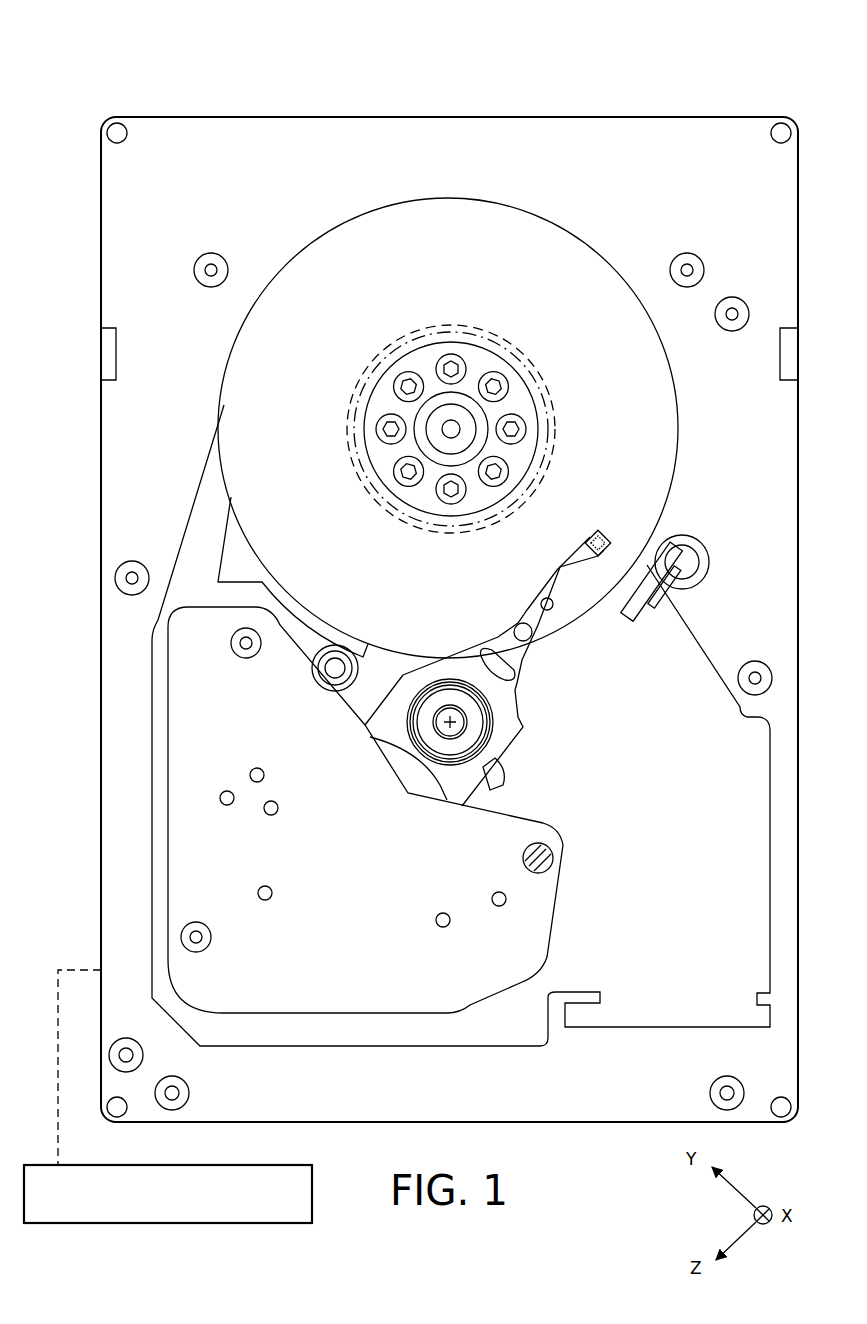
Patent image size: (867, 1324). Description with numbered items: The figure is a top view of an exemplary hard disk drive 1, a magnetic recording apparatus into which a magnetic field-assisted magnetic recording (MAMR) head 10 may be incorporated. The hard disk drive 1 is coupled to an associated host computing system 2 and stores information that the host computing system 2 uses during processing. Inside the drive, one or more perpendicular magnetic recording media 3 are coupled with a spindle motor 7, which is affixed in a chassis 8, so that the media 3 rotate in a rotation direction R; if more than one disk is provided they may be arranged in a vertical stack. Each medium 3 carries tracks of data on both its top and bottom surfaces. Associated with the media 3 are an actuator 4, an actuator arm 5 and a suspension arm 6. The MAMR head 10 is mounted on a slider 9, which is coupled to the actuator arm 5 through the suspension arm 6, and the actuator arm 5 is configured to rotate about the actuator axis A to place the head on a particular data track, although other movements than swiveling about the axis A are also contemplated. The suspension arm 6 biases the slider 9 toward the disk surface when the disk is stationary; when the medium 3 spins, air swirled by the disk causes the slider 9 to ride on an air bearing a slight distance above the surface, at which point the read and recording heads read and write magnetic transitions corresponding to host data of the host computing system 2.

The hard disk drive 1 is at (360, 38).
The host computing system 2 is at (168, 1096).
The perpendicular magnetic recording media 3 is at (482, 242).
The actuator 4 is at (540, 910).
The actuator arm 5 is at (530, 615).
The suspension arm 6 is at (567, 582).
The spindle motor 7 is at (456, 424).
The chassis 8 is at (482, 117).
The slider 9 is at (590, 537).
The magnetic field-assisted magnetic recording head 10 is at (605, 535).
The actuator axis A is at (455, 721).
The rotation direction R is at (512, 297).